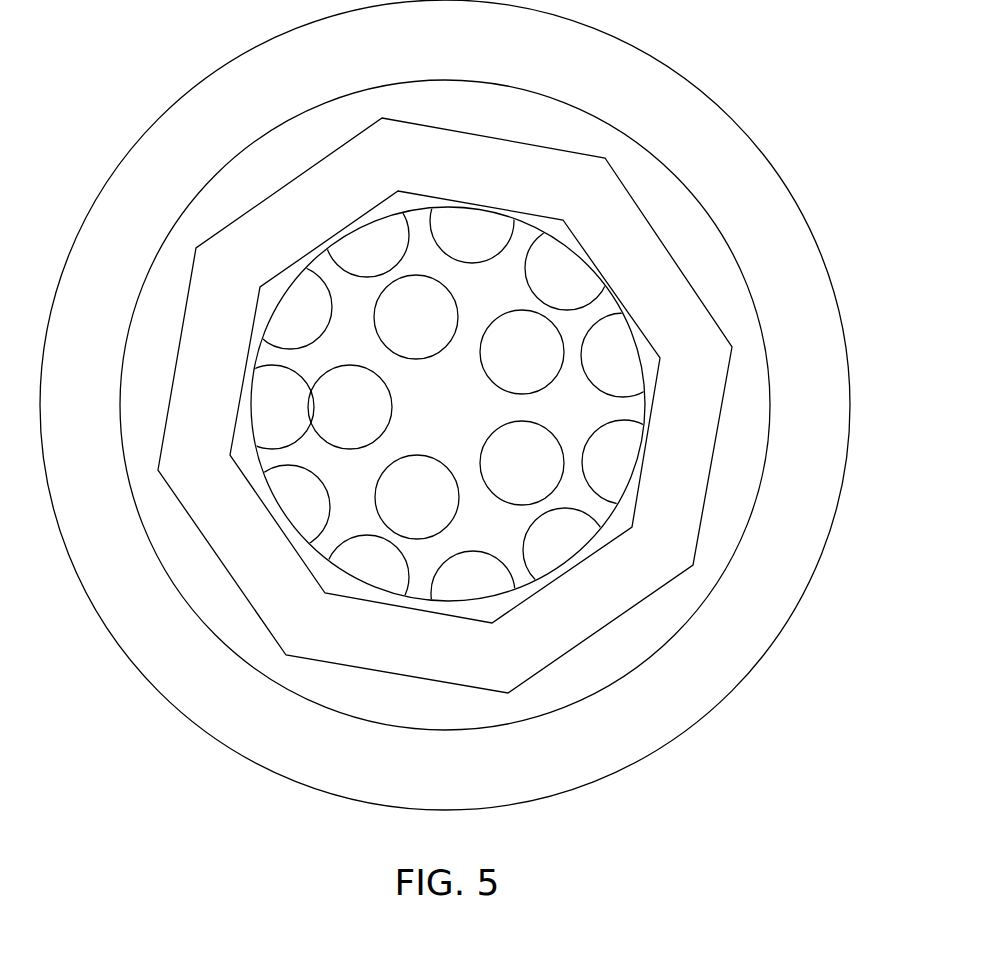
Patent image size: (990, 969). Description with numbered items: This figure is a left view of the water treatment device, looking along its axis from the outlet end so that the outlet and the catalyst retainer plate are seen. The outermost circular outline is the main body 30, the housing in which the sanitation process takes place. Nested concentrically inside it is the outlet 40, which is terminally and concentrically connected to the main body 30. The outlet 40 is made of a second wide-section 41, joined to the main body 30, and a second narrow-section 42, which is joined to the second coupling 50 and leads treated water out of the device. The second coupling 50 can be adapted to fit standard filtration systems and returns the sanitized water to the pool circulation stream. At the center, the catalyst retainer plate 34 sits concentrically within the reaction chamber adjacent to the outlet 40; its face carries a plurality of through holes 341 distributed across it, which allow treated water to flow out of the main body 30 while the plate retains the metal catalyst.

The main body 30 is at (863, 310).
The outlet 40 is at (710, 193).
The second wide-section 41 is at (173, 313).
The second narrow-section 42 is at (422, 203).
The second coupling 50 is at (687, 463).
The catalyst retainer plate 34 is at (465, 415).
The through holes 341 is at (303, 293).